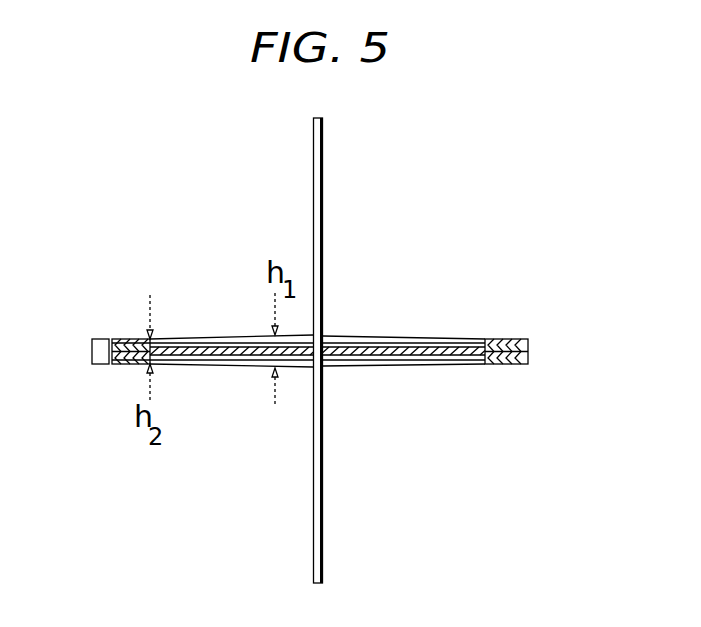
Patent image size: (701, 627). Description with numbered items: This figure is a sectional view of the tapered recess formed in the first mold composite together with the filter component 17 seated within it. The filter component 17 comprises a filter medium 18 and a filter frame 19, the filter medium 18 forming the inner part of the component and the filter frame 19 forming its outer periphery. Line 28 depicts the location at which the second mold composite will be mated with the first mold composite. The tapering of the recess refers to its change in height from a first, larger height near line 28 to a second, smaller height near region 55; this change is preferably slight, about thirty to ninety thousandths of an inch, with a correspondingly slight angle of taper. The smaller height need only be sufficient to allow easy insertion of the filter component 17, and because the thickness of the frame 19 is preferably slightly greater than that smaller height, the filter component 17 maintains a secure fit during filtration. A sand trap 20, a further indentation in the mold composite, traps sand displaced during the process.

The filter component 17 is at (311, 308).
The filter medium 18 is at (215, 345).
The filter frame 19 is at (528, 352).
The sand trap 20 is at (92, 352).
The line 28 is at (323, 185).
The region 55 is at (118, 338).